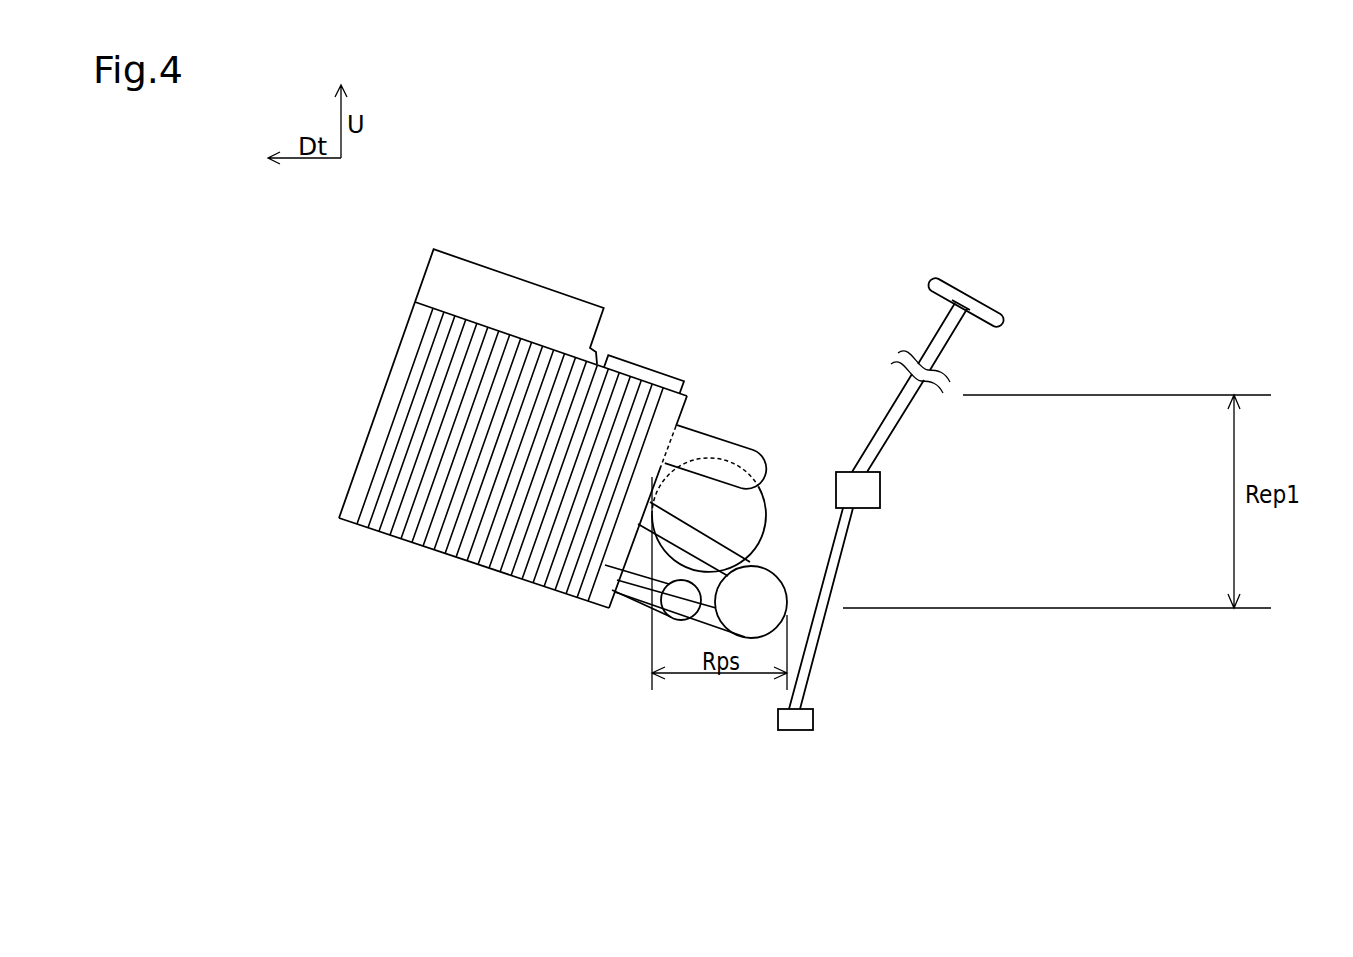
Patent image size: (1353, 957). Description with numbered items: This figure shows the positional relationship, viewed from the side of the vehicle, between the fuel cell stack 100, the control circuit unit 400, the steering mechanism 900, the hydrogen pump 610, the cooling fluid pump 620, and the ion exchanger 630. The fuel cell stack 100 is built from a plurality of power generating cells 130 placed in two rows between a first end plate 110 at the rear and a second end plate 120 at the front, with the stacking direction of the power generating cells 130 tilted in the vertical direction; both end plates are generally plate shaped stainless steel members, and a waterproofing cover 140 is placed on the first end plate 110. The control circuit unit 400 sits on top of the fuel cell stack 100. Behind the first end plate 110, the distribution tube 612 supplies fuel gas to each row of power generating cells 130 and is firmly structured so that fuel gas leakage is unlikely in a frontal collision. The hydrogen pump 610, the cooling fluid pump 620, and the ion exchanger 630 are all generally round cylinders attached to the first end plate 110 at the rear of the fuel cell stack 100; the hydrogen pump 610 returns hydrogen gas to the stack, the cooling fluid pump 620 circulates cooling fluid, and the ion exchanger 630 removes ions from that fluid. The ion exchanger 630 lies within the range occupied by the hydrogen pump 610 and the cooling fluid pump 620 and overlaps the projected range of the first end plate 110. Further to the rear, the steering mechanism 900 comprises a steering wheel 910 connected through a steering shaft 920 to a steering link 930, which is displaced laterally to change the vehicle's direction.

The fuel cell stack 100 is at (405, 675).
The first end plate 110 is at (579, 552).
The second end plate 120 is at (352, 525).
The power generating cells 130 is at (569, 605).
The waterproofing cover 140 is at (596, 606).
The control circuit unit 400 is at (527, 280).
The hydrogen pump 610 is at (765, 513).
The distribution tube 612 is at (722, 440).
The cooling fluid pump 620 is at (770, 571).
The ion exchanger 630 is at (683, 622).
The steering mechanism 900 is at (1001, 237).
The steering wheel 910 is at (1000, 314).
The steering shaft 920 is at (858, 509).
The steering link 930 is at (817, 721).